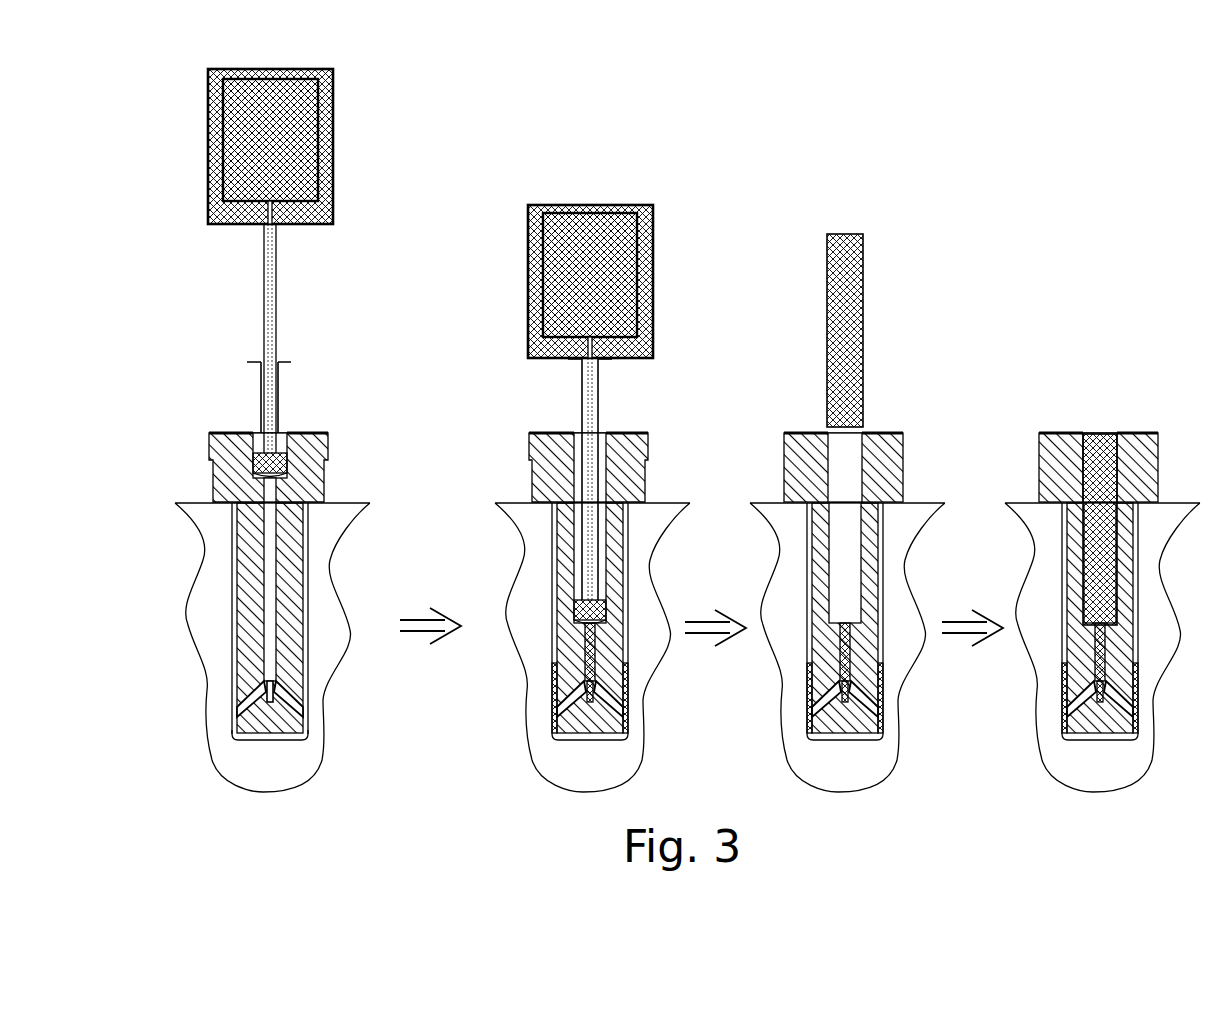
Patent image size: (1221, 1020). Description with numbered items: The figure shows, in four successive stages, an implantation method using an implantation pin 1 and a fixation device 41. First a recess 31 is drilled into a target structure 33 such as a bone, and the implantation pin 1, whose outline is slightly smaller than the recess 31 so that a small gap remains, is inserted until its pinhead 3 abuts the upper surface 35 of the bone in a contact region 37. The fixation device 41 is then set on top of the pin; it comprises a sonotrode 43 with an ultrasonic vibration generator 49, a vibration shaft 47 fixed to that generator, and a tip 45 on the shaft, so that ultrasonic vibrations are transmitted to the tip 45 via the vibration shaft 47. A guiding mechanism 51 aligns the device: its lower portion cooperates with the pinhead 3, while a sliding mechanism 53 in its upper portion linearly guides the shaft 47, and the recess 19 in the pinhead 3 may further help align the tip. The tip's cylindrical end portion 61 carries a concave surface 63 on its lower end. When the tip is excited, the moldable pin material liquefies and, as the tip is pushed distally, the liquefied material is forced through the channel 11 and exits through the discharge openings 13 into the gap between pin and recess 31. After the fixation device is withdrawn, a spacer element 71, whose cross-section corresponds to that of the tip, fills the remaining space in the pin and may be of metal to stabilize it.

The implantation pin 1 is at (281, 585).
The pinhead 3 is at (322, 437).
The channel 11 is at (272, 610).
The discharge openings 13 is at (289, 688).
The recess in the pinhead 19 is at (258, 432).
The recess 31 is at (281, 741).
The target structure 33 is at (261, 779).
The upper surface 35 is at (350, 502).
The contact region 37 is at (329, 513).
The fixation device 41 is at (293, 257).
The sonotrode 43 is at (330, 128).
The tip 45 is at (272, 289).
The vibration shaft 47 is at (267, 204).
The ultrasonic vibration generator 49 is at (309, 96).
The guiding mechanism 51 is at (290, 402).
The sliding mechanism 53 is at (262, 383).
The cylindrical end portion 61 is at (327, 433).
The concave surface 63 is at (262, 476).
The spacer element 71 is at (850, 290).